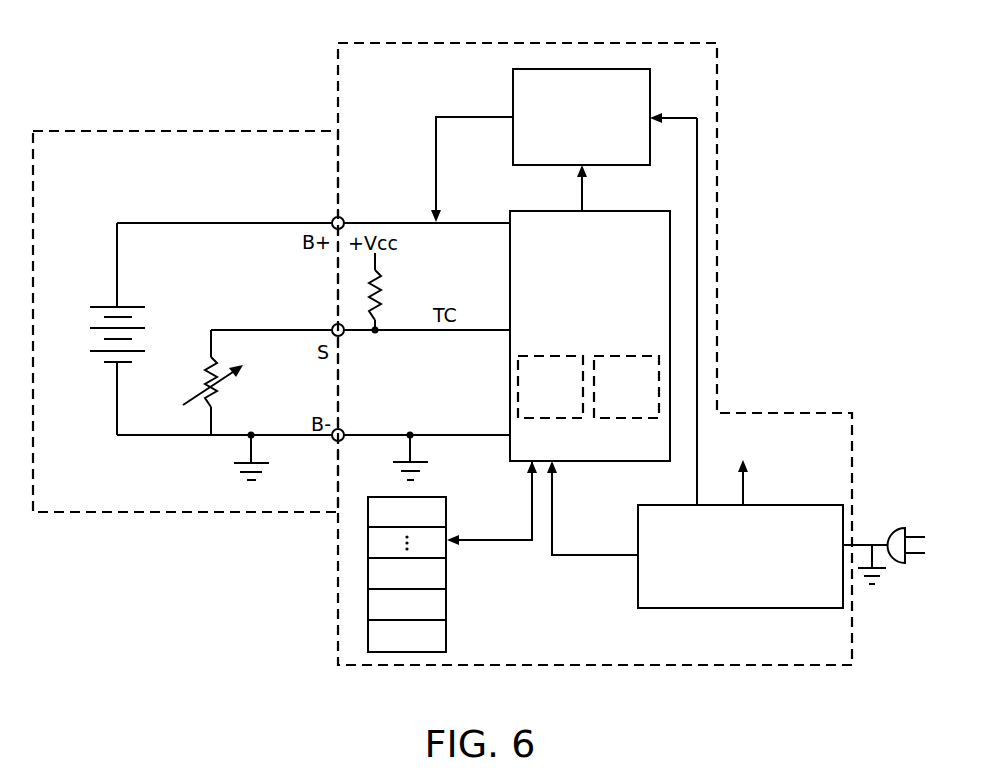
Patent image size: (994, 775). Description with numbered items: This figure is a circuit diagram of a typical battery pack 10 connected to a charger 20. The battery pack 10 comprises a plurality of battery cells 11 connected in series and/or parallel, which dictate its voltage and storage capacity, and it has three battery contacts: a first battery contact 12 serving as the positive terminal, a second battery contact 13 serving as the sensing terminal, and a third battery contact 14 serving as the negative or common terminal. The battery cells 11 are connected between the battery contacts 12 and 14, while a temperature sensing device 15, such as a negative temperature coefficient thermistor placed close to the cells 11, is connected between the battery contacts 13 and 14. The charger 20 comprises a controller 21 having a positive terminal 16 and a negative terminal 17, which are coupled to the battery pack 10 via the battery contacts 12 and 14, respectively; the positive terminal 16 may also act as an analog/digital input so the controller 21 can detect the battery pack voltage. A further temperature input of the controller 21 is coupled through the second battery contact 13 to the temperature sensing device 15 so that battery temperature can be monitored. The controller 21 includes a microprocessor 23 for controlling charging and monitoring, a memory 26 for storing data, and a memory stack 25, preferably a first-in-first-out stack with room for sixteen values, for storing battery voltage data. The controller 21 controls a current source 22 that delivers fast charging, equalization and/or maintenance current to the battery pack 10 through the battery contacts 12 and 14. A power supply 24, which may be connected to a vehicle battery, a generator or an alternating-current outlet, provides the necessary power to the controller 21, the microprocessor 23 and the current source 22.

The battery pack 10 is at (232, 210).
The battery cells 11 is at (160, 316).
The first battery contact 12 is at (344, 220).
The second battery contact 13 is at (332, 326).
The third battery contact 14 is at (344, 432).
The temperature sensing device 15 is at (190, 378).
The positive terminal 16 is at (481, 252).
The negative terminal 17 is at (482, 467).
The charger 20 is at (730, 161).
The controller 21 is at (572, 292).
The current source 22 is at (571, 159).
The microprocessor 23 is at (539, 413).
The power supply 24 is at (729, 590).
The memory stack 25 is at (462, 591).
The memory 26 is at (616, 413).